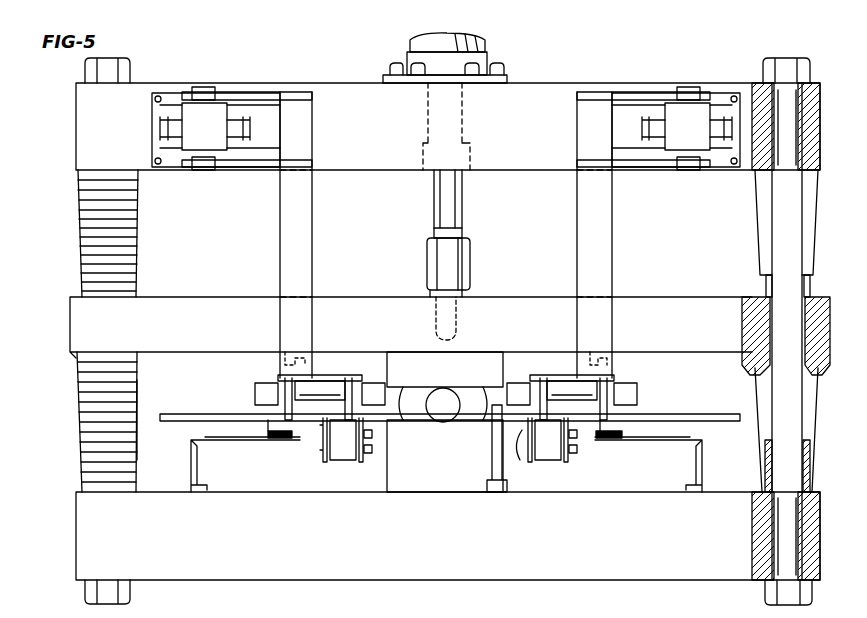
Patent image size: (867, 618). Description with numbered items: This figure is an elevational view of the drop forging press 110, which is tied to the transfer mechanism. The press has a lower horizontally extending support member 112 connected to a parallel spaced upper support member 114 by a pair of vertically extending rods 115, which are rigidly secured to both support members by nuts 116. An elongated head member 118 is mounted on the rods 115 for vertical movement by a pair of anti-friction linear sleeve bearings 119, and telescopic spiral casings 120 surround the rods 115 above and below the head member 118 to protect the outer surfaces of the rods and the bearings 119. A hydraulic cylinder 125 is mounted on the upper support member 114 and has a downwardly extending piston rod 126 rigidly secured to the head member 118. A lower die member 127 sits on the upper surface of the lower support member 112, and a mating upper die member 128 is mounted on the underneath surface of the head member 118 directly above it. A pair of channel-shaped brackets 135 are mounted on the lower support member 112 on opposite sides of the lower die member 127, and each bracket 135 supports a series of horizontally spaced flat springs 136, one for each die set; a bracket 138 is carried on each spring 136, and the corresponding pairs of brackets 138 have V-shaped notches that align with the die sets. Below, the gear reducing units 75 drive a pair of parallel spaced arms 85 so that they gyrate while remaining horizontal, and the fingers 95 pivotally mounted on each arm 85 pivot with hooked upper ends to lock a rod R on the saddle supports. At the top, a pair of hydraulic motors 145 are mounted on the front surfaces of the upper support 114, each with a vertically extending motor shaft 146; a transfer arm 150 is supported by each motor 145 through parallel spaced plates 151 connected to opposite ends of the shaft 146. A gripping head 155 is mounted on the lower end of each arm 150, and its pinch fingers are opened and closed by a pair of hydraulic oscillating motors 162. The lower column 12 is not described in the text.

The lower column 12 is at (130, 395).
The gear reducing unit 75 is at (418, 405).
The arm 85 is at (346, 450).
The finger 95 is at (522, 445).
The drop forging press 110 is at (536, 80).
The lower support member 112 is at (343, 560).
The upper support member 114 is at (530, 136).
The rod 115 is at (775, 240).
The nut 116 is at (82, 75).
The head member 118 is at (206, 334).
The anti-friction linear sleeve bearing 119 is at (760, 312).
The telescopic spiral casing 120 is at (130, 240).
The hydraulic cylinder 125 is at (410, 44).
The piston rod 126 is at (434, 208).
The lower die member 127 is at (447, 487).
The upper die member 128 is at (484, 352).
The channel-shaped bracket 135 is at (190, 462).
The flat spring 136 is at (250, 442).
The bracket 138 is at (296, 440).
The hydraulic motor 145 is at (217, 137).
The motor shaft 146 is at (204, 170).
The transfer arm 150 is at (280, 256).
The plate 151 is at (276, 92).
The gripping head 155 is at (335, 380).
The hydraulic oscillating motor 162 is at (257, 388).
The rod R is at (700, 414).